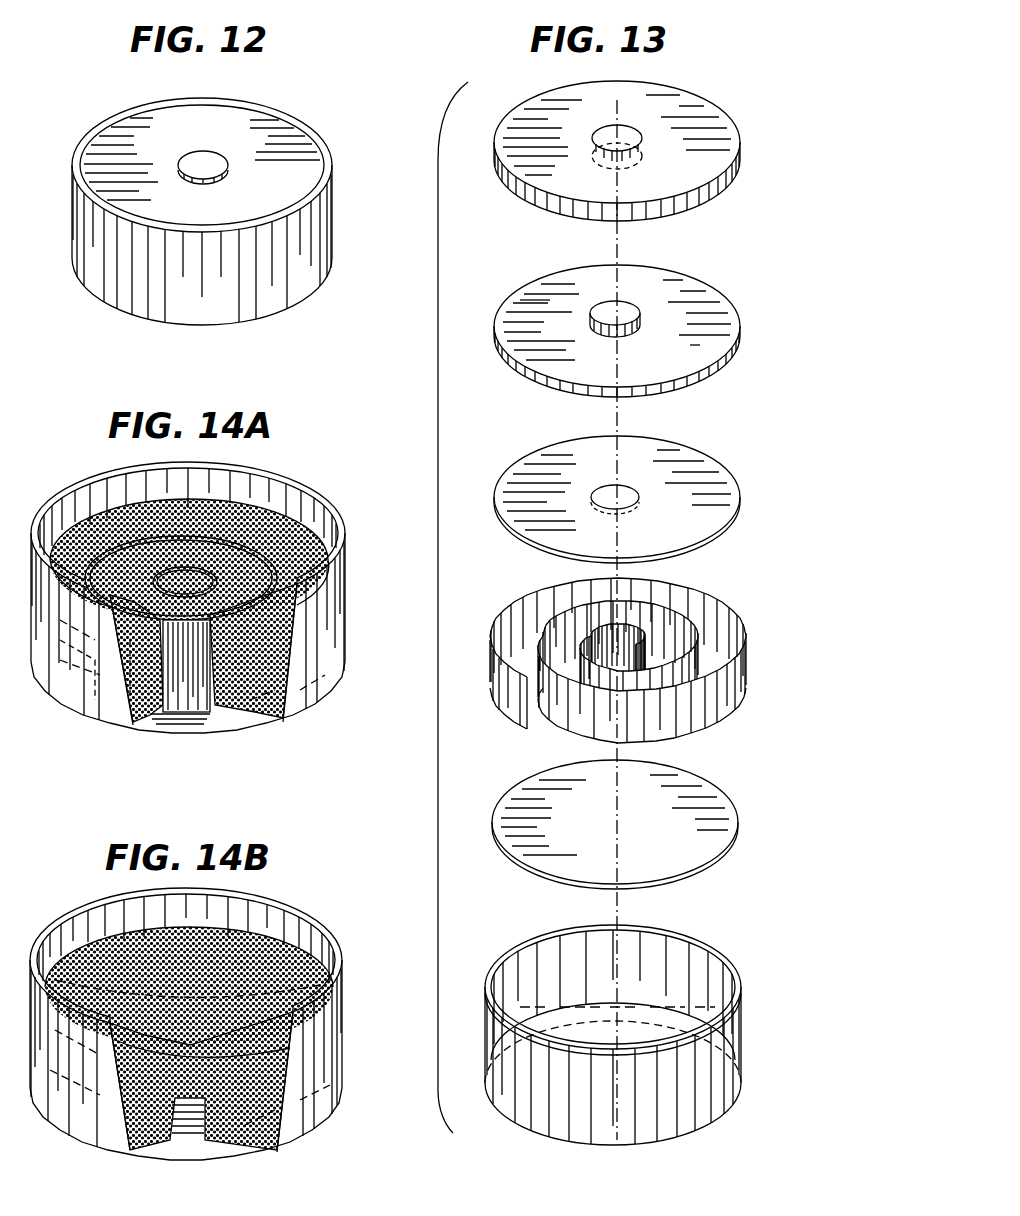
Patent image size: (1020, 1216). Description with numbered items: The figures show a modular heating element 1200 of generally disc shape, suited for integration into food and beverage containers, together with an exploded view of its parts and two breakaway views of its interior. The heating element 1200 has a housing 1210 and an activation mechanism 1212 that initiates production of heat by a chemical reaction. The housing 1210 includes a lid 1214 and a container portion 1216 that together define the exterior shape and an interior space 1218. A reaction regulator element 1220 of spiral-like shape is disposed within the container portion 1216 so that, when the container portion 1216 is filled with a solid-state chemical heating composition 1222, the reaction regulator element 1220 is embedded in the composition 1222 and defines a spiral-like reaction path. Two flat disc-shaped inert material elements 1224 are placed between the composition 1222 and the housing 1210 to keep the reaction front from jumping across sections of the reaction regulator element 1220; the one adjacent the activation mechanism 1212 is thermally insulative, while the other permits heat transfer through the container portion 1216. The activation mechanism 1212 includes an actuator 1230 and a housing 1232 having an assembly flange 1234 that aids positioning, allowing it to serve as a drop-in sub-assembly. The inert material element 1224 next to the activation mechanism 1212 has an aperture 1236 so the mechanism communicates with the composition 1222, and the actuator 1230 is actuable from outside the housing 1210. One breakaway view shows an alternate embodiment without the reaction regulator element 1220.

In FIG. 12, the modular heating element 1200 is at (94, 108).
In FIG. 13, the modular heating element 1200 is at (438, 312).
In FIG. 12, the housing 1210 is at (87, 235).
In FIG. 12, the activation mechanism 1212 is at (206, 160).
In FIG. 13, the activation mechanism 1212 is at (720, 291).
In FIG. 13, the lid 1214 is at (730, 107).
In FIG. 13, the container portion 1216 is at (735, 1070).
In FIG. 14A, the container portion 1216 is at (322, 608).
In FIG. 14B, the container portion 1216 is at (322, 1022).
In FIG. 13, the interior space 1218 is at (652, 963).
In FIG. 13, the reaction regulator element 1220 is at (762, 652).
In FIG. 14A, the reaction regulator element 1220 is at (195, 665).
In FIG. 14A, the solid-state chemical heating composition 1222 is at (100, 530).
In FIG. 14B, the solid-state chemical heating composition 1222 is at (135, 945).
In FIG. 13, the inert material element 1224 is at (565, 462).
In FIG. 13, the actuator 1230 is at (605, 305).
In FIG. 13, the housing 1232 is at (552, 318).
In FIG. 13, the assembly flange 1234 is at (695, 340).
In FIG. 13, the aperture 1236 is at (628, 496).